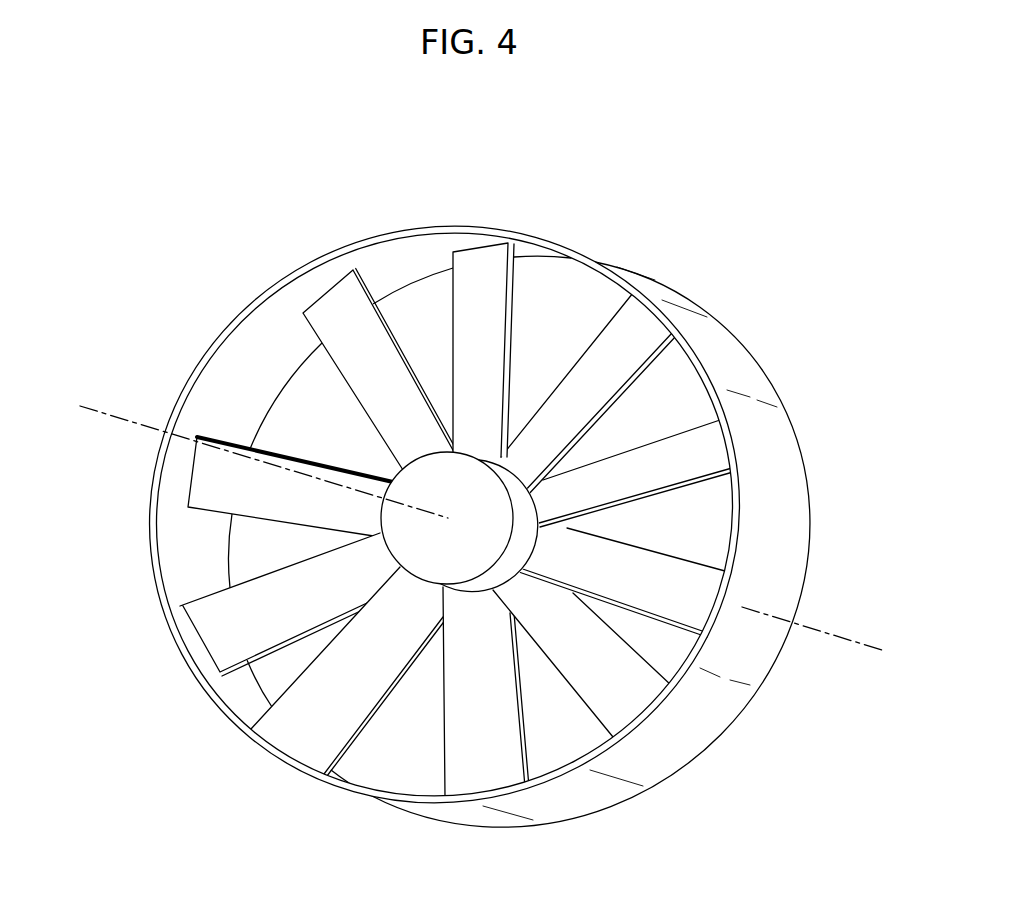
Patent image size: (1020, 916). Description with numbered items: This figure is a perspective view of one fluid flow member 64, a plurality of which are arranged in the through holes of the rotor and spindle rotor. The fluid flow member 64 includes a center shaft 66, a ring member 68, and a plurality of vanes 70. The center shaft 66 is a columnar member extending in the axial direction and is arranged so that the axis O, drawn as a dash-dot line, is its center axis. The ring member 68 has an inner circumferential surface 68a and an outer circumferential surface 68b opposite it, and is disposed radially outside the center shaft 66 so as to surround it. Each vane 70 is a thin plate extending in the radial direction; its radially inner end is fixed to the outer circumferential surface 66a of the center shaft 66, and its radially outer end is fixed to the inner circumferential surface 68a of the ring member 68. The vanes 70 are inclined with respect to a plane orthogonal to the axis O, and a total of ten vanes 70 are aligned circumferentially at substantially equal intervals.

The fluid flow member 64 is at (461, 515).
The center shaft 66 is at (481, 667).
The outer circumferential surface of the center shaft 66a is at (480, 590).
The ring member 68 is at (448, 515).
The inner circumferential surface 68a is at (247, 413).
The outer circumferential surface 68b is at (697, 733).
The vanes 70 is at (683, 457).
The axis O is at (75, 388).